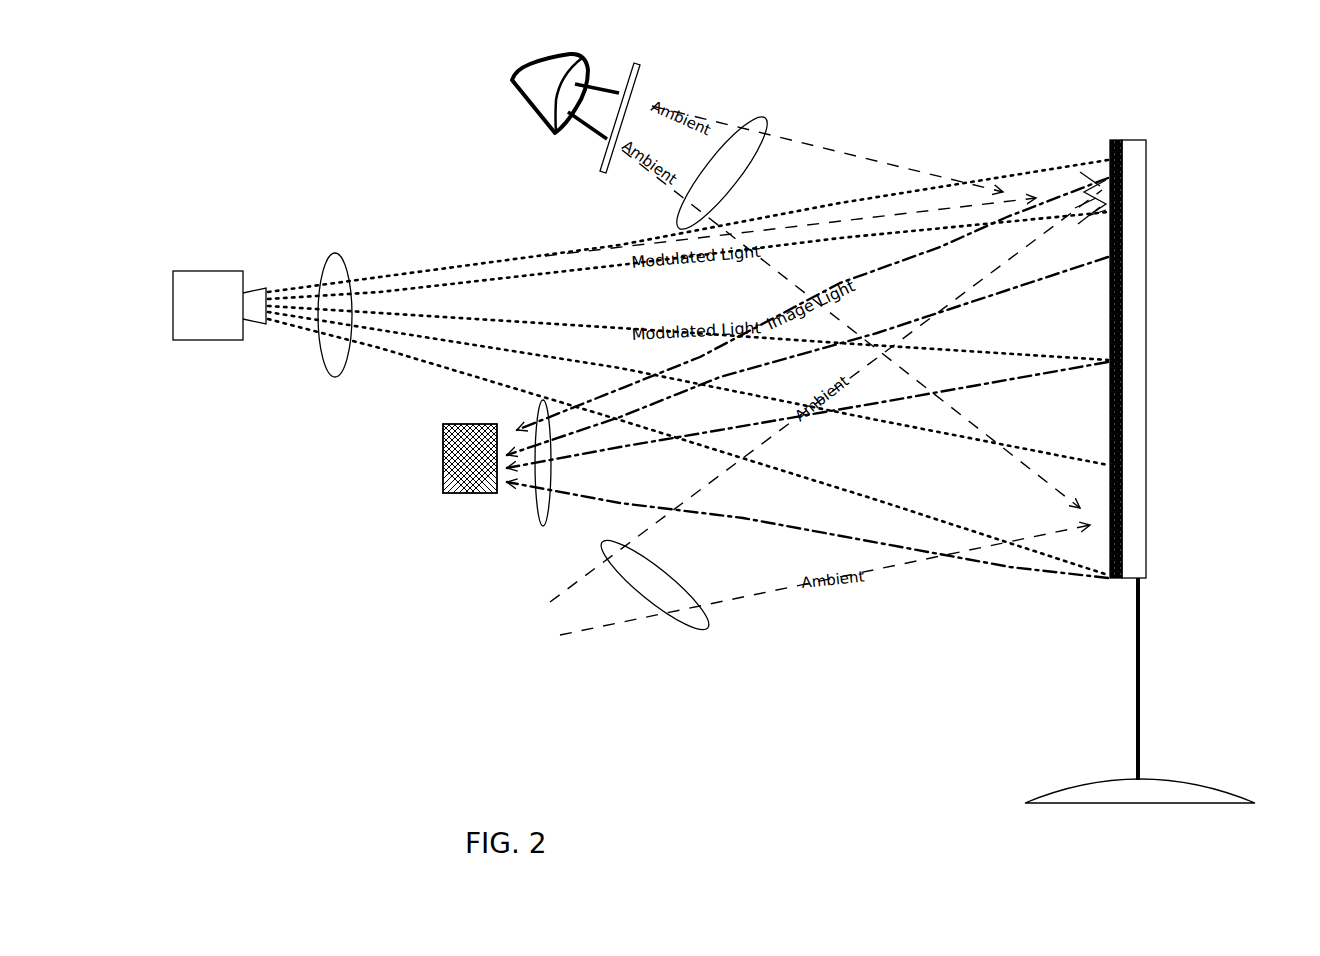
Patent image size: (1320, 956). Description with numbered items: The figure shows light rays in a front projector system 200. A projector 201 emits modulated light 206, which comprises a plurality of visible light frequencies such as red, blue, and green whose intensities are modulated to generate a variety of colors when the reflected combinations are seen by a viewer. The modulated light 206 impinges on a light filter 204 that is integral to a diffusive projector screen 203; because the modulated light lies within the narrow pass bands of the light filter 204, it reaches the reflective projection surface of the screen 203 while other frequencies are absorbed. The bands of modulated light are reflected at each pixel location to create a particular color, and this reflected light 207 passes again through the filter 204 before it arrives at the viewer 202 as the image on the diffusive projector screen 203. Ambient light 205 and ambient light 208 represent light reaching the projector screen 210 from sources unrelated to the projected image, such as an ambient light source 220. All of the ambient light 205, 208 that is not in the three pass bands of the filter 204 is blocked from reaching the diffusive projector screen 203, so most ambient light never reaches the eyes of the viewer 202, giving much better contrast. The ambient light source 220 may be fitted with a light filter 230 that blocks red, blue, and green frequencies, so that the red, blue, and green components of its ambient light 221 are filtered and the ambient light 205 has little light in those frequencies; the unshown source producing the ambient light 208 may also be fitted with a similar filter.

The front projector system 200 is at (441, 628).
The projector 201 is at (205, 271).
The viewer 202 is at (442, 480).
The diffusive projector screen 203 is at (1130, 140).
The light filter 204 is at (1110, 140).
The ambient light 205 is at (775, 125).
The modulated light 206 is at (335, 378).
The reflected light 207 is at (538, 510).
The ambient light 208 is at (670, 628).
The projector screen 210 is at (1136, 655).
The ambient light source 220 is at (510, 106).
The ambient light 221 is at (605, 86).
The light filter 230 is at (604, 160).